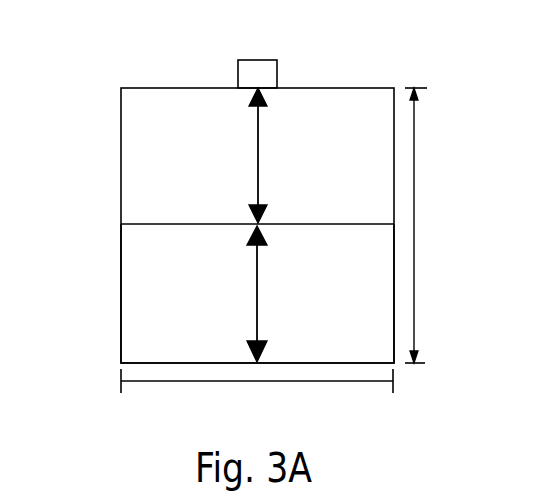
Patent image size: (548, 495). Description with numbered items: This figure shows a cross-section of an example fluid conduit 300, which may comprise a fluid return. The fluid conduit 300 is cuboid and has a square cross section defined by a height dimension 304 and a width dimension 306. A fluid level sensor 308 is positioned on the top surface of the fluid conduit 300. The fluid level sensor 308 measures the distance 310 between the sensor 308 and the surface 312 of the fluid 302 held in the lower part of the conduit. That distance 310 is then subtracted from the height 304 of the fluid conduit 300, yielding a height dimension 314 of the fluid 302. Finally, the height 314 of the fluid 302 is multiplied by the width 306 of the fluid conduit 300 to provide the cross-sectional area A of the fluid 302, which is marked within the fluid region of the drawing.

The fluid conduit 300 is at (121, 147).
The fluid 302 is at (121, 285).
The height dimension 304 is at (433, 225).
The width dimension 306 is at (257, 390).
The fluid level sensor 308 is at (238, 72).
The distance 310 is at (258, 177).
The surface 312 is at (193, 224).
The height dimension 314 is at (258, 299).